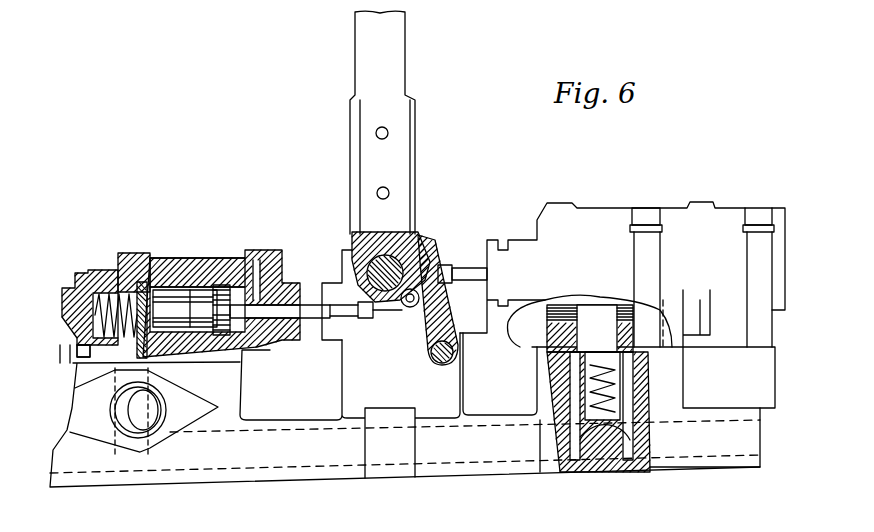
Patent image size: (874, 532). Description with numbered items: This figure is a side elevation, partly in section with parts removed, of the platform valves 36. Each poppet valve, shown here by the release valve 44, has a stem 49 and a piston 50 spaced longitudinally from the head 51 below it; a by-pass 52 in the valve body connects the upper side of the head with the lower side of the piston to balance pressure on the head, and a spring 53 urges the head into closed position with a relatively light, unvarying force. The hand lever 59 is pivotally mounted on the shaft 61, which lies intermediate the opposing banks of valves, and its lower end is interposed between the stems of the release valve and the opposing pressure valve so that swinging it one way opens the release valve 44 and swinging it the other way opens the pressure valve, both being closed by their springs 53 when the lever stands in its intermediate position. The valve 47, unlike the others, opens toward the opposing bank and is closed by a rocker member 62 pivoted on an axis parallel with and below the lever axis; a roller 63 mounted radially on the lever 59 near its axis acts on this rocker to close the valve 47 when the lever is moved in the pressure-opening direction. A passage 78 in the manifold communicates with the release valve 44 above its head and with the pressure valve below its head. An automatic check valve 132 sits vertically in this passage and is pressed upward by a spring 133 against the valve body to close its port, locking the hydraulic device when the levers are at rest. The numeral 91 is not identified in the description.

The platform valves 36 is at (243, 352).
The release valve 44 is at (85, 275).
The valve 47 is at (603, 215).
The stem 49 is at (275, 330).
The piston 50 is at (235, 262).
The head 51 is at (128, 287).
The by-pass 52 is at (200, 265).
The spring 53 is at (90, 346).
The hand lever 59 is at (405, 58).
The shaft 61 is at (425, 242).
The rocker member 62 is at (430, 330).
The roller 63 is at (404, 310).
The passage 78 is at (208, 465).
The base 91 is at (280, 480).
The automatic check valve 132 is at (640, 348).
The spring 133 is at (620, 395).